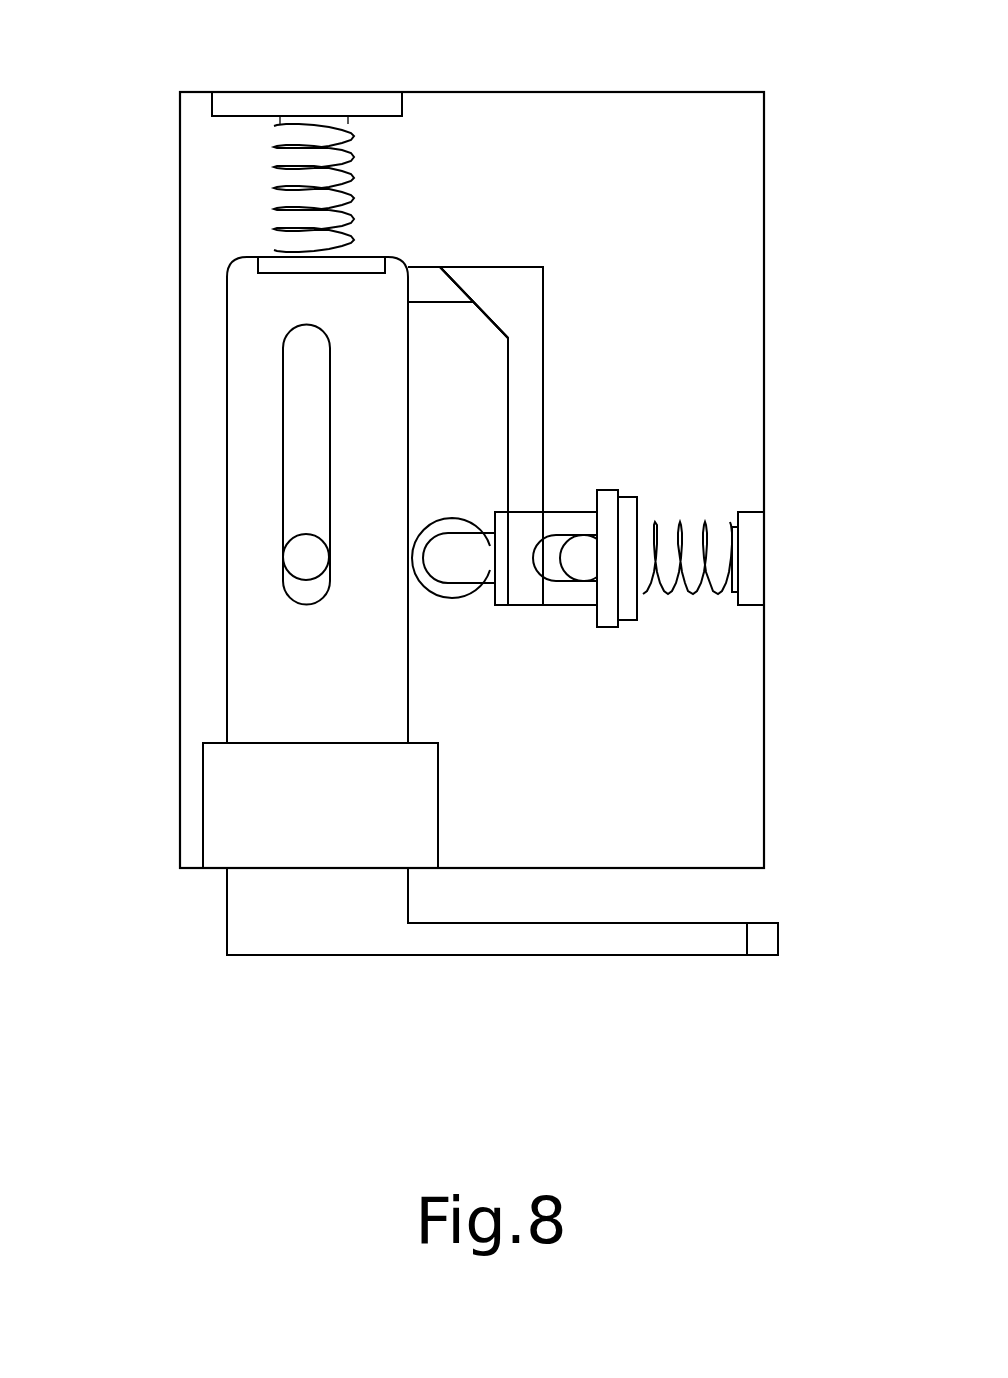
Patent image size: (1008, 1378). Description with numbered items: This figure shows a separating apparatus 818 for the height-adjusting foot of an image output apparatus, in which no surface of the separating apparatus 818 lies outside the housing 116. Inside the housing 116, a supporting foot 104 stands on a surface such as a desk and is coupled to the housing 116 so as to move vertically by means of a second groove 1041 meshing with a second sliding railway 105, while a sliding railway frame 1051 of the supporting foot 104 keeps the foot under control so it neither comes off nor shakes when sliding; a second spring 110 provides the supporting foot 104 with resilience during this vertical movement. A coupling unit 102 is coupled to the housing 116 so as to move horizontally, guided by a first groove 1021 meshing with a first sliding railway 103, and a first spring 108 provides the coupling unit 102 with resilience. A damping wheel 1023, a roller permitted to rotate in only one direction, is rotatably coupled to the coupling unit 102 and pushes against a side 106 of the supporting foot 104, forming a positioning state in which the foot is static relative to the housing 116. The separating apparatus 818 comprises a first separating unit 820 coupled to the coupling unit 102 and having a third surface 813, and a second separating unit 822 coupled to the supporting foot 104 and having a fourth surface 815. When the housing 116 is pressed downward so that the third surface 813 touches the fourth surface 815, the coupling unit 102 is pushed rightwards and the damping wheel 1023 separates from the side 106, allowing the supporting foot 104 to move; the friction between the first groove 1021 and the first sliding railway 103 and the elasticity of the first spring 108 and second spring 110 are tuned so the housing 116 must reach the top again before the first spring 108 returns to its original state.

The coupling unit 102 is at (528, 700).
The first sliding railway 103 is at (590, 560).
The supporting foot 104 is at (245, 932).
The second sliding railway 105 is at (302, 560).
The side of the supporting foot 106 is at (408, 610).
The first spring 108 is at (718, 535).
The second spring 110 is at (313, 145).
The housing 116 is at (764, 725).
The third surface 813 is at (497, 325).
The fourth surface 815 is at (457, 290).
The separating apparatus 818 is at (488, 198).
The first separating unit 820 is at (517, 280).
The second separating unit 822 is at (430, 283).
The first groove 1021 is at (555, 565).
The damping wheel 1023 is at (447, 585).
The second groove 1041 is at (306, 452).
The sliding railway frame 1051 is at (237, 782).